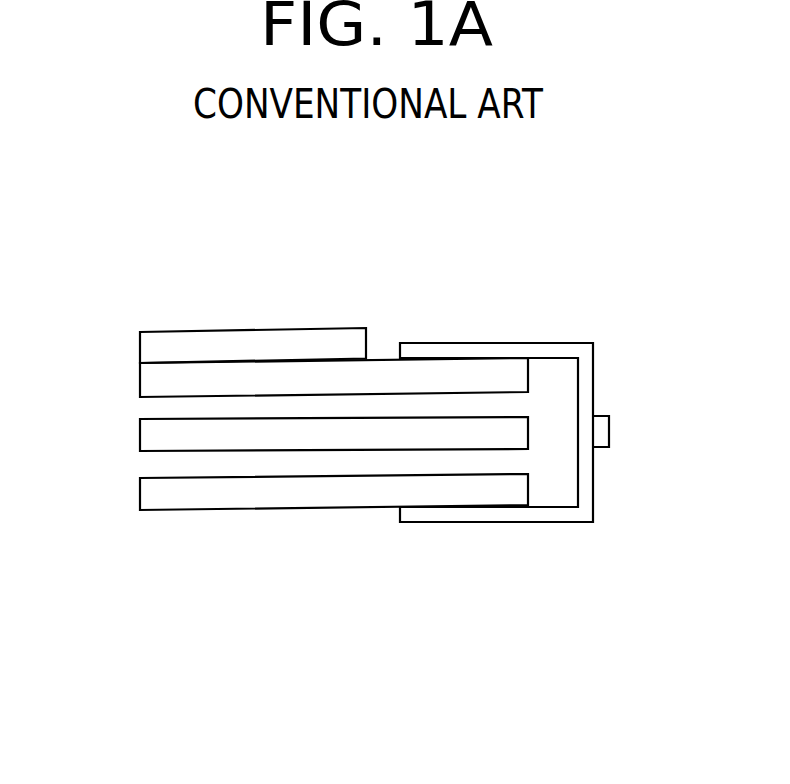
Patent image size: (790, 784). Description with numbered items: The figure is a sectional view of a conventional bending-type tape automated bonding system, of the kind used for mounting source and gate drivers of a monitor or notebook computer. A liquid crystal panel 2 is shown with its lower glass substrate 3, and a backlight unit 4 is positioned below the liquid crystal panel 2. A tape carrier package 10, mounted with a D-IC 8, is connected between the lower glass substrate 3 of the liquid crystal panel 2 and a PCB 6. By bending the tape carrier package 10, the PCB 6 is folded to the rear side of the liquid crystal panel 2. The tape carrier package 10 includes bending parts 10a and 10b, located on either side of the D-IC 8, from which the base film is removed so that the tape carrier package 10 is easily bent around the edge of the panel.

The liquid crystal panel 2 is at (112, 351).
The lower glass substrate 3 is at (142, 386).
The backlight unit 4 is at (142, 446).
The PCB 6 is at (142, 503).
The D-IC 8 is at (610, 428).
The tape carrier package 10 is at (594, 490).
The bending part 10a is at (587, 353).
The bending part 10b is at (573, 523).